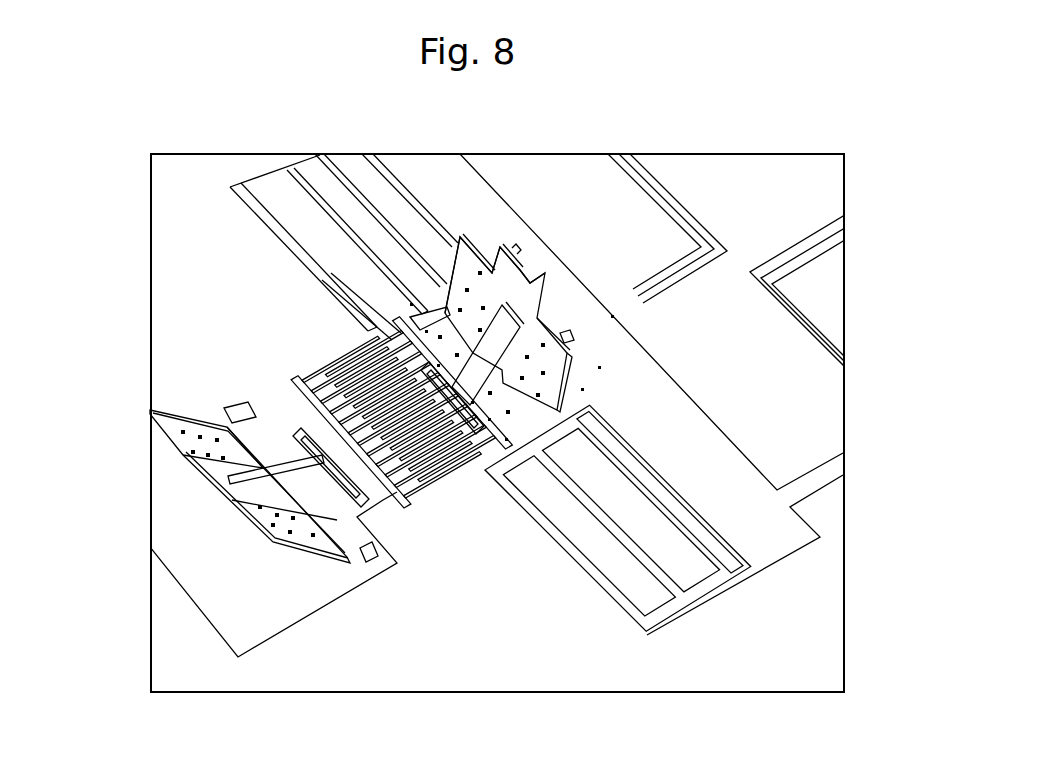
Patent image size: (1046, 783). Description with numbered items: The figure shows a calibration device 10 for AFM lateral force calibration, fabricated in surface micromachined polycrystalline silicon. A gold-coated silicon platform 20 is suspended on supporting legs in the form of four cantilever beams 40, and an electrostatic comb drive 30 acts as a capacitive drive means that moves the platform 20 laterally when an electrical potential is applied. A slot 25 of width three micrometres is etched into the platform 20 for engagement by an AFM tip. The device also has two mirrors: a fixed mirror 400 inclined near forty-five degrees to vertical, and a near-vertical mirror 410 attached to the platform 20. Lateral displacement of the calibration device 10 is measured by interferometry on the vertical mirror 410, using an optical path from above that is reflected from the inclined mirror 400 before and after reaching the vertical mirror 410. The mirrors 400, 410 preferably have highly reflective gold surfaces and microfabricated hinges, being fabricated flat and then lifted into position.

The calibration device 10 is at (507, 430).
The platform 20 is at (567, 350).
The slot 25 is at (567, 337).
The electrostatic comb drive 30 is at (432, 473).
The cantilever beams 40 is at (378, 222).
The fixed mirror 400 is at (250, 497).
The vertical mirror 410 is at (513, 288).